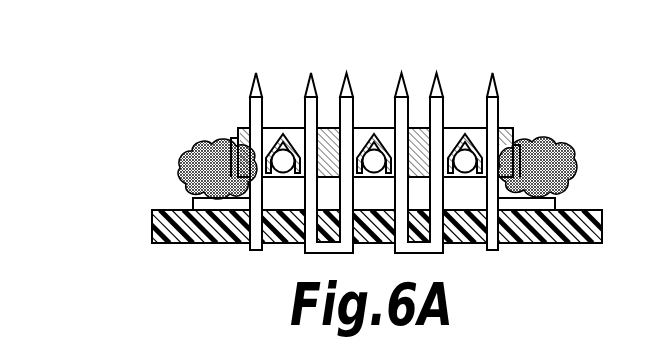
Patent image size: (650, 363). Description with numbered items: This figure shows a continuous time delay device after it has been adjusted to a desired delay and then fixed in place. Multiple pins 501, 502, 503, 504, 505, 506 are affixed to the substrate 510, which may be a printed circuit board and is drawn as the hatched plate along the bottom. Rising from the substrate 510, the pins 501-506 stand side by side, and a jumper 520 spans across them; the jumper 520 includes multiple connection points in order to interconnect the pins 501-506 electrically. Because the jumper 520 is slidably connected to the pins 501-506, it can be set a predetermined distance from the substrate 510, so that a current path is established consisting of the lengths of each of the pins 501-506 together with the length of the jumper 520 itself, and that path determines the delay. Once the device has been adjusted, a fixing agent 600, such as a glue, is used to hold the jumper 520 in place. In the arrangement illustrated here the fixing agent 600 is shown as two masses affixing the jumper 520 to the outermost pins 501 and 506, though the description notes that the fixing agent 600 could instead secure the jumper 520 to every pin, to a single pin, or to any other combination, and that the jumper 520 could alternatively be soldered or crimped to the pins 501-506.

The pin 501 is at (250, 113).
The pin 502 is at (305, 98).
The pin 503 is at (338, 97).
The pin 504 is at (410, 98).
The pin 505 is at (443, 100).
The pin 506 is at (500, 100).
The substrate 510 is at (153, 212).
The jumper 520 is at (518, 135).
The fixing agent 600 is at (190, 148).